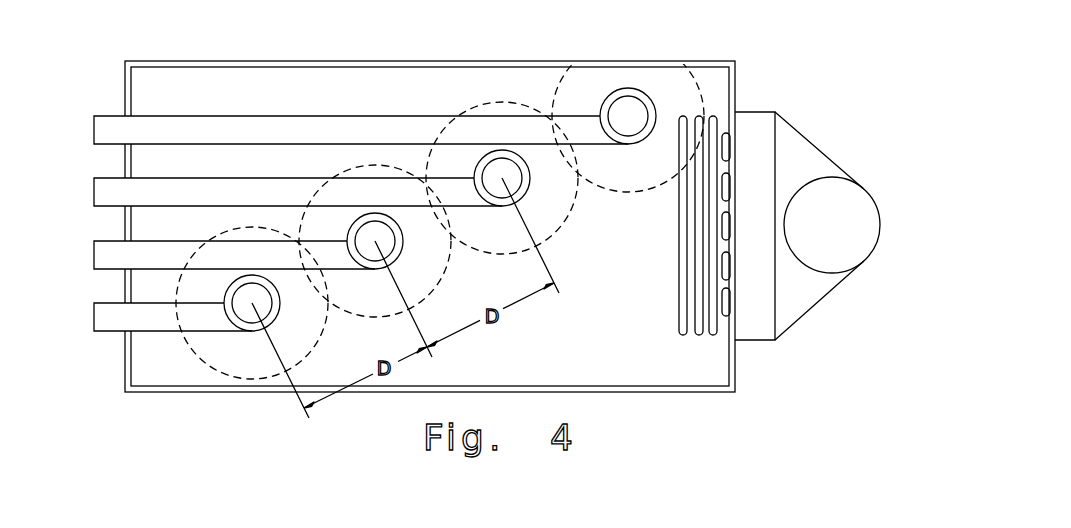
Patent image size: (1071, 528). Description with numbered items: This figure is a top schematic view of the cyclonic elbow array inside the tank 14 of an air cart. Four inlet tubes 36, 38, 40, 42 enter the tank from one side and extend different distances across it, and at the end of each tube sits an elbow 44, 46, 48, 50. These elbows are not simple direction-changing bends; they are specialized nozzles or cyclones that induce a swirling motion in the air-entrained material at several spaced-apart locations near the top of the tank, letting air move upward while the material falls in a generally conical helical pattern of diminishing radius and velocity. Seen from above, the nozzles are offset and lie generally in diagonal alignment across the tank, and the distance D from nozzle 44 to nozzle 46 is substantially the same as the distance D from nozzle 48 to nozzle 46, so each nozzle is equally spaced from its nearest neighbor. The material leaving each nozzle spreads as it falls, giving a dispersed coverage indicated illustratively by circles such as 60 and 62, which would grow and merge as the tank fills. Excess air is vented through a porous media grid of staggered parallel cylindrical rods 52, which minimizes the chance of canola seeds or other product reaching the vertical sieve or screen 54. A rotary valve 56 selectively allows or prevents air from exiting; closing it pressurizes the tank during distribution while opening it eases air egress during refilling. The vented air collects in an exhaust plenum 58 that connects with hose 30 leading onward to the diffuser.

The tank 14 is at (577, 352).
The hose 30 is at (860, 195).
The inlet tube 36 is at (115, 328).
The inlet tube 38 is at (177, 247).
The inlet tube 40 is at (268, 185).
The inlet tube 42 is at (117, 122).
The elbow 44 is at (274, 318).
The elbow 46 is at (398, 255).
The elbow 48 is at (528, 187).
The elbow 50 is at (618, 90).
The staggered parallel cylindrical rods 52 is at (681, 299).
The vertical sieve or screen 54 is at (731, 307).
The rotary valve 56 is at (756, 122).
The exhaust plenum 58 is at (800, 303).
The circle 60 is at (617, 193).
The circle 62 is at (482, 105).